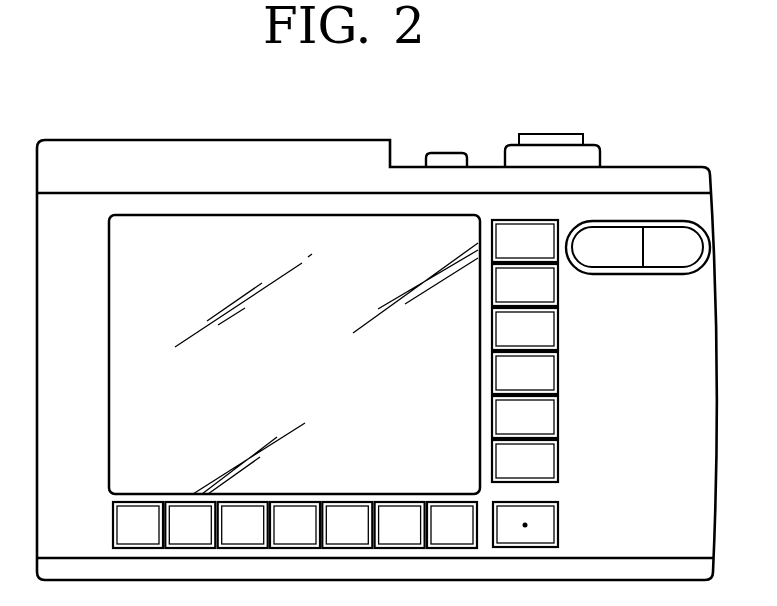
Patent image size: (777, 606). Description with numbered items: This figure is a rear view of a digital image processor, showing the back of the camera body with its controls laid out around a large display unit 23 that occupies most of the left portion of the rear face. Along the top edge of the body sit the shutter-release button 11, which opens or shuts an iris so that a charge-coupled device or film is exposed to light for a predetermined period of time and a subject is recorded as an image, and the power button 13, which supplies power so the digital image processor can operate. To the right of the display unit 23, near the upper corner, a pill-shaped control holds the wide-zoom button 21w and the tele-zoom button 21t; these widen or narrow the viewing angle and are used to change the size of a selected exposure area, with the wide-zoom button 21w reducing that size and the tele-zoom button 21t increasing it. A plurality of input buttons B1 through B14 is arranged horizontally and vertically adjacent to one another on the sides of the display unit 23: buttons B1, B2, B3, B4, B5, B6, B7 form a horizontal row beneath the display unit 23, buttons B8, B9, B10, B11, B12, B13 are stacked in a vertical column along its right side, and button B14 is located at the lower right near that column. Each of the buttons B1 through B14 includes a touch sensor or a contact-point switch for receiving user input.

The shutter-release button 11 is at (554, 140).
The power button 13 is at (447, 156).
The display unit 23 is at (184, 231).
The wide-zoom button 21w is at (614, 247).
The tele-zoom button 21t is at (666, 247).
The input button B1 is at (138, 525).
The input button B2 is at (190, 525).
The input button B3 is at (243, 525).
The input button B4 is at (295, 525).
The input button B5 is at (347, 525).
The input button B6 is at (400, 525).
The input button B7 is at (452, 525).
The input button B8 is at (525, 241).
The input button B9 is at (525, 285).
The input button B10 is at (525, 329).
The input button B11 is at (525, 373).
The input button B12 is at (525, 417).
The input button B13 is at (525, 461).
The input button B14 is at (558, 524).